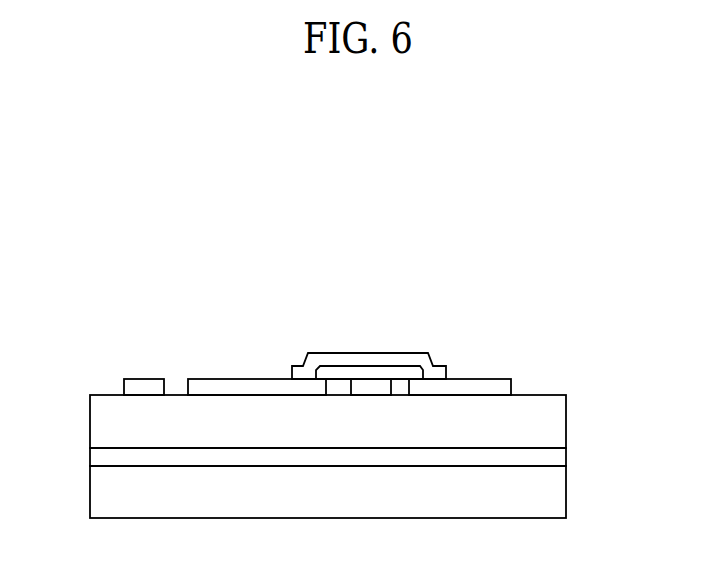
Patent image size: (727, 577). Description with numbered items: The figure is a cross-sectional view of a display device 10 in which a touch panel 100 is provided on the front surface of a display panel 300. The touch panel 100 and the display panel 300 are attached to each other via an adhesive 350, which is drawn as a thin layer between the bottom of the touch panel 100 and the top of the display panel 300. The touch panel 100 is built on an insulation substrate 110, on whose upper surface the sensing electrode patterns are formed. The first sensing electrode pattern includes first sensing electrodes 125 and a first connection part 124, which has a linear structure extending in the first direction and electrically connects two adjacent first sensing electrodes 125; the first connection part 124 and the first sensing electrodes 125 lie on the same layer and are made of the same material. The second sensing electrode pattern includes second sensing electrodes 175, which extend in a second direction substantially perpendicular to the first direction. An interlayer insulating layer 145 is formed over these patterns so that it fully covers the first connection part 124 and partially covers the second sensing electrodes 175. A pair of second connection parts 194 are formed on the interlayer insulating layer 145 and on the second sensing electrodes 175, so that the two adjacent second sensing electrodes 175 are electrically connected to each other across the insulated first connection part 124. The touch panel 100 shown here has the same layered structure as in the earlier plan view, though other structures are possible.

The display device 10 is at (506, 216).
The touch panel 100 is at (80, 357).
The insulation substrate 110 is at (547, 421).
The first connection part 124 is at (370, 387).
The first sensing electrodes 125 is at (145, 387).
The interlayer insulating layer 145 is at (400, 373).
The second sensing electrodes 175 is at (238, 387).
The second connection parts 194 is at (327, 360).
The display panel 300 is at (547, 493).
The adhesive 350 is at (547, 456).